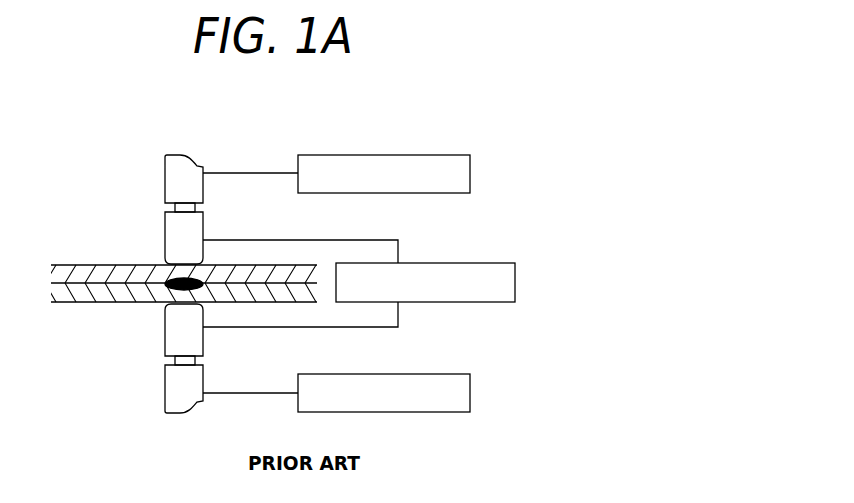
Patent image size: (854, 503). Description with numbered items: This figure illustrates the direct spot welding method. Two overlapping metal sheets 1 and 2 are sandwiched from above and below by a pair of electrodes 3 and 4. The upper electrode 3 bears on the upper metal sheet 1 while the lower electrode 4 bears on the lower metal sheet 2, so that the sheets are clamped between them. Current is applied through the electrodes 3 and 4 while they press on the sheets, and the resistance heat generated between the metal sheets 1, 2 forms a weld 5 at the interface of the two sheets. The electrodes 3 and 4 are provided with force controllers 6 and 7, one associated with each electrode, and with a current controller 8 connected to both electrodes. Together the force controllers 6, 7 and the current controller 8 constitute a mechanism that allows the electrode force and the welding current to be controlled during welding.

The metal sheet 1 is at (97, 267).
The metal sheet 2 is at (97, 299).
The electrode 3 is at (165, 228).
The electrode 4 is at (162, 345).
The weld 5 is at (168, 289).
The force controller 6 is at (343, 154).
The force controller 7 is at (343, 373).
The current controller 8 is at (418, 263).